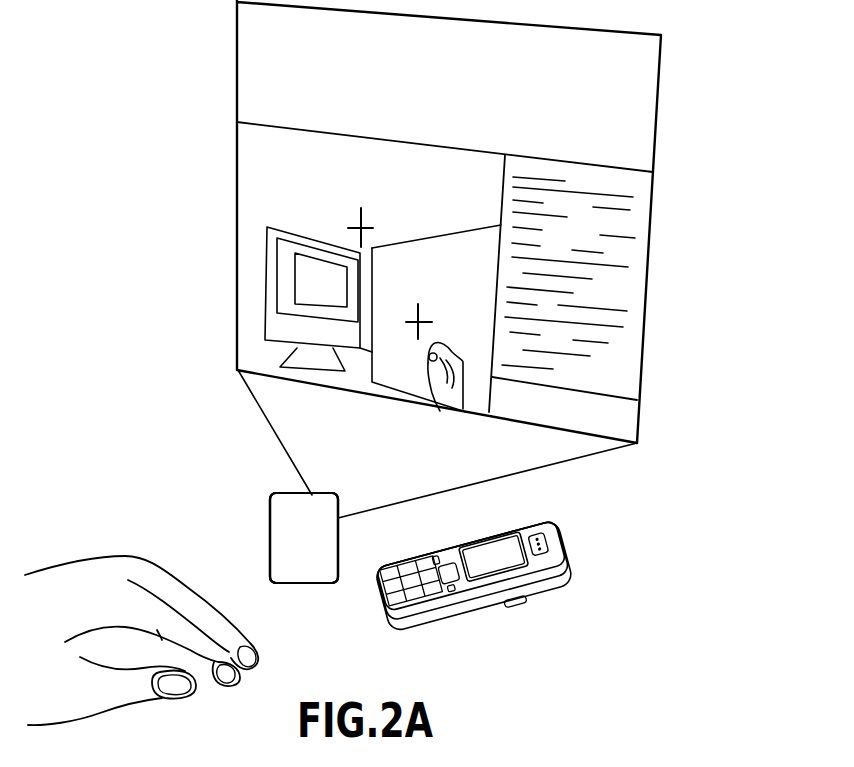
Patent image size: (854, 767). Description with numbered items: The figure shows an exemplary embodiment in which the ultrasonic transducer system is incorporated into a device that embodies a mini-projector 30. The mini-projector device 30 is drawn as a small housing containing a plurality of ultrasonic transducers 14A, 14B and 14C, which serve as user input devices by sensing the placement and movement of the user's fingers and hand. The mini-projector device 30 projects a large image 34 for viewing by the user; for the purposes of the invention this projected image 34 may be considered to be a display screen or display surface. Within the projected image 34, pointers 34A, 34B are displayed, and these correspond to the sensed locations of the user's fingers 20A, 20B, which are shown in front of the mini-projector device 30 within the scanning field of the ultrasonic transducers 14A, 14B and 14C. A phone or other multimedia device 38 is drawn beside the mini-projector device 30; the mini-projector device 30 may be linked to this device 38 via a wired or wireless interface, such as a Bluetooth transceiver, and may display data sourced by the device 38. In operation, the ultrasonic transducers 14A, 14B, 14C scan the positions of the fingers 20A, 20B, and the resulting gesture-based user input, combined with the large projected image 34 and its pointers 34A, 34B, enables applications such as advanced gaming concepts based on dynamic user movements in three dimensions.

The image 34 is at (702, 340).
The pointer 34A is at (355, 228).
The pointer 34B is at (408, 320).
The mini-projector device 30 is at (338, 537).
The ultrasonic transducer 14A is at (315, 505).
The ultrasonic transducer 14B is at (317, 527).
The ultrasonic transducer 14C is at (285, 540).
The finger 20A is at (193, 588).
The finger 20B is at (217, 678).
The phone or other multimedia device 38 is at (497, 618).